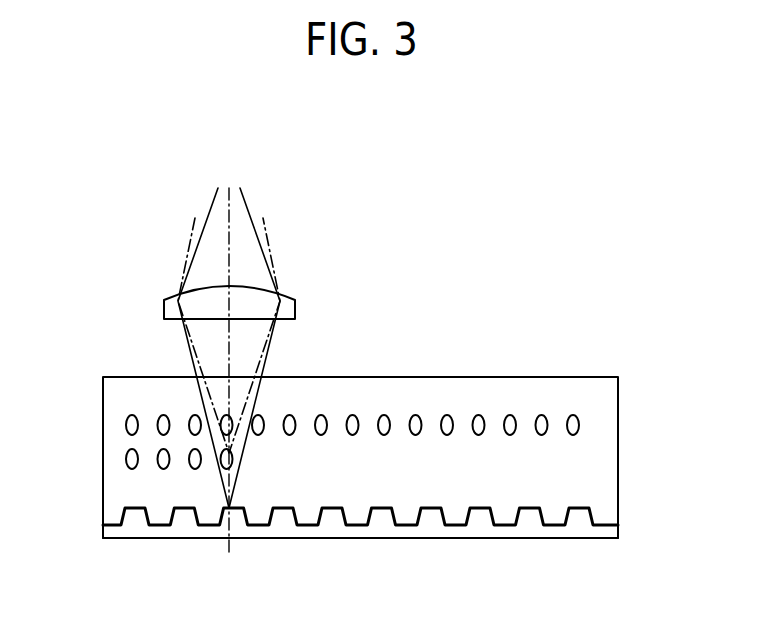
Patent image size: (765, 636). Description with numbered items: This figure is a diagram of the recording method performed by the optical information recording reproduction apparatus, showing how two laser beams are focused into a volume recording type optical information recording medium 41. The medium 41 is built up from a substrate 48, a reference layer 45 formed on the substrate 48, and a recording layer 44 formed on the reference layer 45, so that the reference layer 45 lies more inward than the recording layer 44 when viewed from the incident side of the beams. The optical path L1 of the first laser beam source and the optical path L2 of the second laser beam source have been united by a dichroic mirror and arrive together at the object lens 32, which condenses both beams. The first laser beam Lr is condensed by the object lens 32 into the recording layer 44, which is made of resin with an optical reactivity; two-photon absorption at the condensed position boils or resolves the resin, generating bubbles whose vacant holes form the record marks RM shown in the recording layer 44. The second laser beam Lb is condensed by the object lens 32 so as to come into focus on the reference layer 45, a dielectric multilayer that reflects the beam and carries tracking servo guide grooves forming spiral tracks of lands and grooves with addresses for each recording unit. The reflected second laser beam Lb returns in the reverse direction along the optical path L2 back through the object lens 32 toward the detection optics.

The optical information recording medium 41 is at (531, 285).
The object lens 32 is at (296, 300).
The optical path of the first laser beam source L1 is at (228, 191).
The optical path of the second laser beam source L2 is at (222, 341).
The second laser beam Lb is at (247, 203).
The first laser beam Lr is at (270, 246).
The record marks RM is at (579, 423).
The recording layer 44 is at (113, 432).
The reference layer 45 is at (120, 525).
The substrate 48 is at (118, 535).